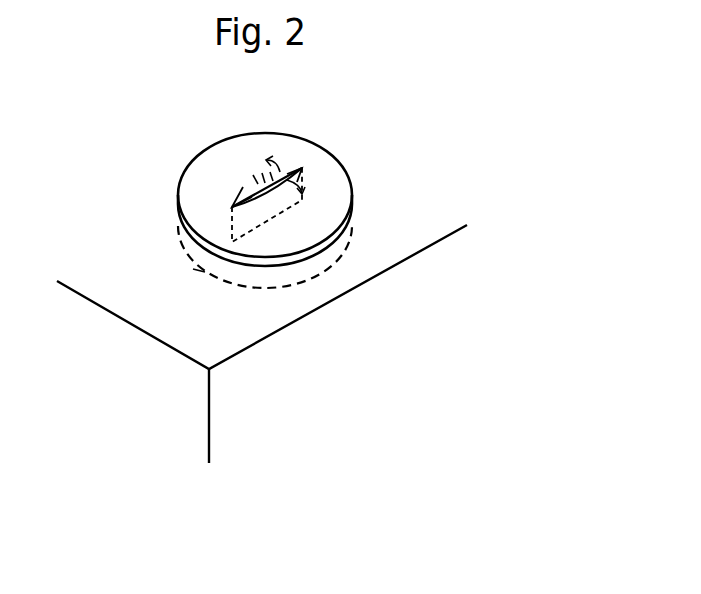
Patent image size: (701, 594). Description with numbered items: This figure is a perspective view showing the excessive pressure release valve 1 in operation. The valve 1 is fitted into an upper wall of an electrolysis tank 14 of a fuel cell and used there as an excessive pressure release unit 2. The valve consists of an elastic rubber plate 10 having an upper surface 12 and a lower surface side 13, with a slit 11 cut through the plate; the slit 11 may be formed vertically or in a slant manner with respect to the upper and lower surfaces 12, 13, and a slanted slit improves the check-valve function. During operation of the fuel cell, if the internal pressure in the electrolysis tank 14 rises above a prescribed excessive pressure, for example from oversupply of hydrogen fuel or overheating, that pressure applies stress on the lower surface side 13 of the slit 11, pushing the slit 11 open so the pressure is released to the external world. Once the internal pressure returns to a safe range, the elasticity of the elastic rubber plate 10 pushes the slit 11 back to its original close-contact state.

The excessive pressure release valve 1 is at (271, 172).
The excessive pressure release unit 2 is at (273, 457).
The elastic rubber plate 10 is at (330, 172).
The slit 11 is at (258, 205).
The upper surface 12 is at (202, 183).
The lower surface side 13 is at (198, 272).
The electrolysis tank 14 is at (240, 333).